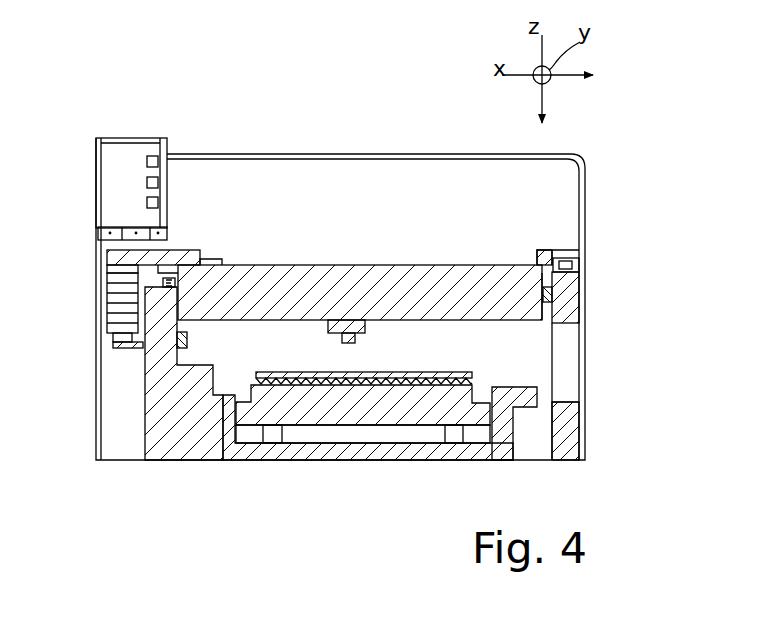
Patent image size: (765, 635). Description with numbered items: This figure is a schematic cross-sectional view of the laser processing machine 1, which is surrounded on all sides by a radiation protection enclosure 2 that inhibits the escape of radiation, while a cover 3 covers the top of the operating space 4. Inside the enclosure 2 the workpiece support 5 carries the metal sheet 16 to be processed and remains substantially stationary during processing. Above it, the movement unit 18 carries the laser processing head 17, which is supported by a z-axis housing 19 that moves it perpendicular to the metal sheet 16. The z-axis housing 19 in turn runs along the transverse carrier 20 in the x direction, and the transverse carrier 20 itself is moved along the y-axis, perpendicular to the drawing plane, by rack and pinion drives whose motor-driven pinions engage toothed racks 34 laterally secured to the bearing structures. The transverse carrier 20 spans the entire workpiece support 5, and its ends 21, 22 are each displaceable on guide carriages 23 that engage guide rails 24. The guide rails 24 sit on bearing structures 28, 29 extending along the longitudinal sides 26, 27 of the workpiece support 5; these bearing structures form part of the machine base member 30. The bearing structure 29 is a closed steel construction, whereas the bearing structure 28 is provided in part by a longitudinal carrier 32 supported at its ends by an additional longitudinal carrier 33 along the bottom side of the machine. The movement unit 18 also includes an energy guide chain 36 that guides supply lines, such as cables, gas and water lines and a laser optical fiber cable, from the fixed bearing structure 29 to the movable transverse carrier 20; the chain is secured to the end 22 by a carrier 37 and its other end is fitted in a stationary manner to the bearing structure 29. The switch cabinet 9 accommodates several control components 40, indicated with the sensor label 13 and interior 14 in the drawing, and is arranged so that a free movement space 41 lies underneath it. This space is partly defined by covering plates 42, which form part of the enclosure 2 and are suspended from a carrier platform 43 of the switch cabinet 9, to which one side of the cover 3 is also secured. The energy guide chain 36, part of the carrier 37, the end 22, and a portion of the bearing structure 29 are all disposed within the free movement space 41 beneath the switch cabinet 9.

The laser processing machine 1 is at (228, 120).
The radiation protection enclosure 2 is at (589, 146).
The cover 3 is at (352, 151).
The operating space 4 is at (297, 364).
The workpiece support 5 is at (435, 410).
The switch cabinet 9 is at (131, 127).
The sensor 13 is at (137, 182).
The sensor housing interior 14 is at (125, 195).
The metal sheet 16 is at (350, 390).
The laser processing head 17 is at (356, 341).
The movement unit 18 is at (413, 251).
The z-axis housing 19 is at (368, 326).
The transverse carrier 20 is at (363, 285).
The end of the transverse carrier 21 is at (551, 255).
The end of the transverse carrier 22 is at (205, 262).
The guide carriages 23 is at (165, 280).
The guide rails 24 is at (160, 287).
The longitudinal side 26 is at (555, 377).
The longitudinal side 27 is at (236, 388).
The bearing structure 28 is at (596, 326).
The bearing structure 29 is at (170, 378).
The machine base member 30 is at (300, 467).
The longitudinal carrier 32 is at (567, 290).
The additional longitudinal carrier 33 is at (570, 430).
The toothed racks 34 is at (190, 340).
The energy guide chain 36 is at (110, 320).
The carrier 37 is at (130, 257).
The control components 40 is at (158, 202).
The free movement space 41 is at (170, 247).
The covering plates 42 is at (98, 440).
The carrier platform 43 is at (100, 236).